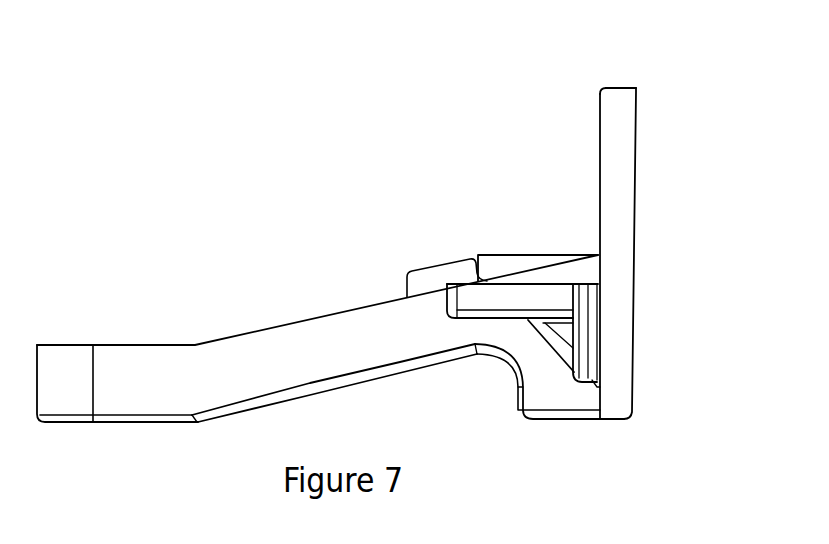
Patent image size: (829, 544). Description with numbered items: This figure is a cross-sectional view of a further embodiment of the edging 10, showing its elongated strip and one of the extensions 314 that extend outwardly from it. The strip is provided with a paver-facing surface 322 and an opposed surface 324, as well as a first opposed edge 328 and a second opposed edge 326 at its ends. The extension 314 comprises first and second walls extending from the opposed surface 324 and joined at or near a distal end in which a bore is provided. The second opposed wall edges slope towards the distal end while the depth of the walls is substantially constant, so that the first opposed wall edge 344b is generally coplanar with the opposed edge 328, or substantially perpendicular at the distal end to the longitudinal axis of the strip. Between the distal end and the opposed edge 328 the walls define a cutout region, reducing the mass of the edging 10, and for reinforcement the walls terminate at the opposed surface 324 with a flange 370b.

The edging 10 is at (585, 95).
The extension 314 is at (297, 339).
The paver-facing surface 322 is at (637, 148).
The opposed surface 324 is at (597, 133).
The second opposed edge 326 is at (622, 87).
The first opposed edge 328 is at (615, 421).
The first opposed wall edge 344b is at (310, 392).
The flange 370b is at (553, 378).